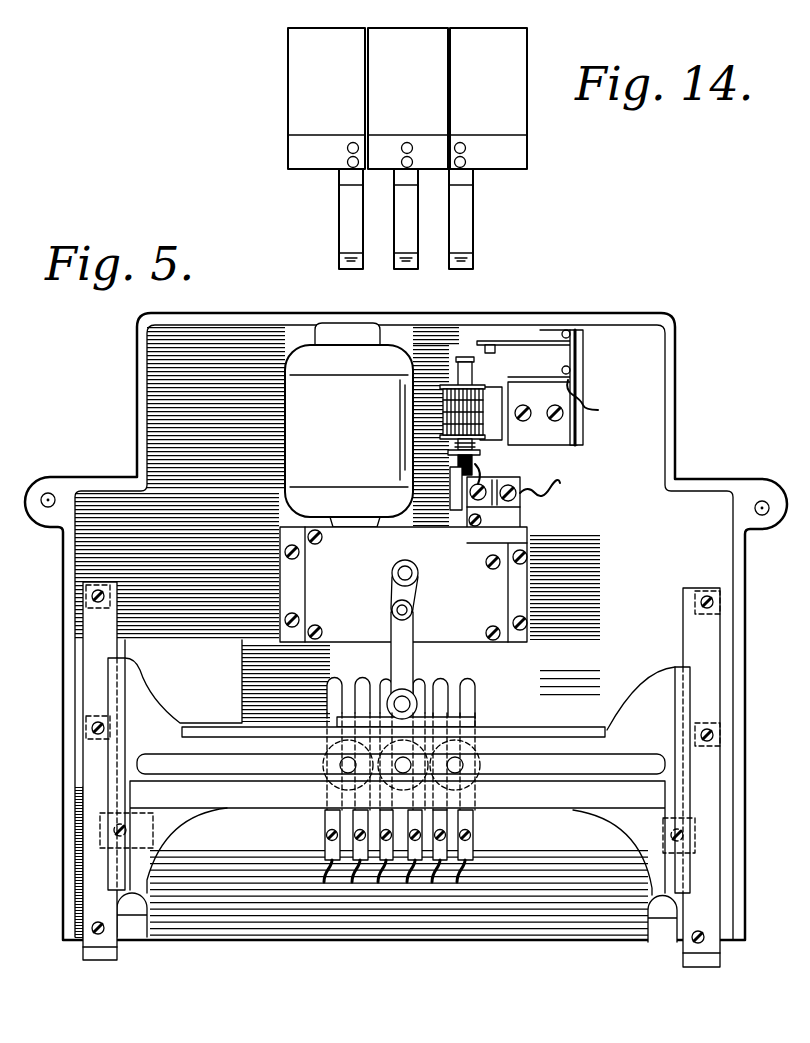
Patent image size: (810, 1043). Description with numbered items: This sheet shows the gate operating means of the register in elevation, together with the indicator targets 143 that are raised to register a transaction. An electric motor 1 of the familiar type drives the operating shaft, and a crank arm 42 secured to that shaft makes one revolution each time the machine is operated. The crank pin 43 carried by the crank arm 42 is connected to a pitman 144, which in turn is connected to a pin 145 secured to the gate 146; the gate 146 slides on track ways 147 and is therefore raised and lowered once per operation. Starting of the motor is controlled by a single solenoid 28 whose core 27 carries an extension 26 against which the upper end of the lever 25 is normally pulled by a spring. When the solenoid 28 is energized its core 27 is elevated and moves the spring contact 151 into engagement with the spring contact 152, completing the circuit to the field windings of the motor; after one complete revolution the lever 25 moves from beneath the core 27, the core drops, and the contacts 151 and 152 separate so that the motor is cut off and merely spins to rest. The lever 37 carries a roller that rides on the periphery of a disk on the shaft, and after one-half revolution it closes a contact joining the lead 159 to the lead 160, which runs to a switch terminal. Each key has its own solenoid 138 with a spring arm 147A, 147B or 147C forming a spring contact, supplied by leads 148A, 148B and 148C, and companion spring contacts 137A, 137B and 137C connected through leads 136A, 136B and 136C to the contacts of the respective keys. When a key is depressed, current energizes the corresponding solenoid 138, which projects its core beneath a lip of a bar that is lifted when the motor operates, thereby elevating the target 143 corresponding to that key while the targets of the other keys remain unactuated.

In FIG. 14, the target 143 is at (350, 135).
In FIG. 5, the electric motor 1 is at (380, 358).
In FIG. 5, the spring contact 152 is at (502, 341).
In FIG. 5, the core 27 is at (472, 378).
In FIG. 5, the solenoid 28 is at (443, 400).
In FIG. 5, the spring contact 151 is at (563, 355).
In FIG. 5, the lever 25 is at (457, 485).
In FIG. 5, the extension 26 is at (483, 464).
In FIG. 5, the lead 159 is at (523, 471).
In FIG. 5, the lead 160 is at (580, 478).
In FIG. 5, the lever 37 is at (522, 513).
In FIG. 5, the crank arm 42 is at (398, 553).
In FIG. 5, the crank pin 43 is at (397, 607).
In FIG. 5, the pitman 144 is at (395, 628).
In FIG. 5, the pin 145 is at (405, 700).
In FIG. 5, the spring arm 147C is at (332, 687).
In FIG. 5, the spring contact 137C is at (363, 683).
In FIG. 5, the spring contact 137B is at (418, 682).
In FIG. 5, the spring arm 147A is at (293, 738).
In FIG. 5, the spring contact 137A is at (475, 697).
In FIG. 5, the spring arm 147B is at (393, 741).
In FIG. 5, the track ways 147 is at (683, 638).
In FIG. 5, the gate 146 is at (638, 718).
In FIG. 5, the solenoid 138 is at (487, 770).
In FIG. 5, the lead 148C is at (324, 882).
In FIG. 5, the lead 136C is at (352, 882).
In FIG. 5, the lead 148B is at (378, 882).
In FIG. 5, the lead 136B is at (407, 882).
In FIG. 5, the lead 148A is at (432, 882).
In FIG. 5, the lead 136A is at (457, 882).